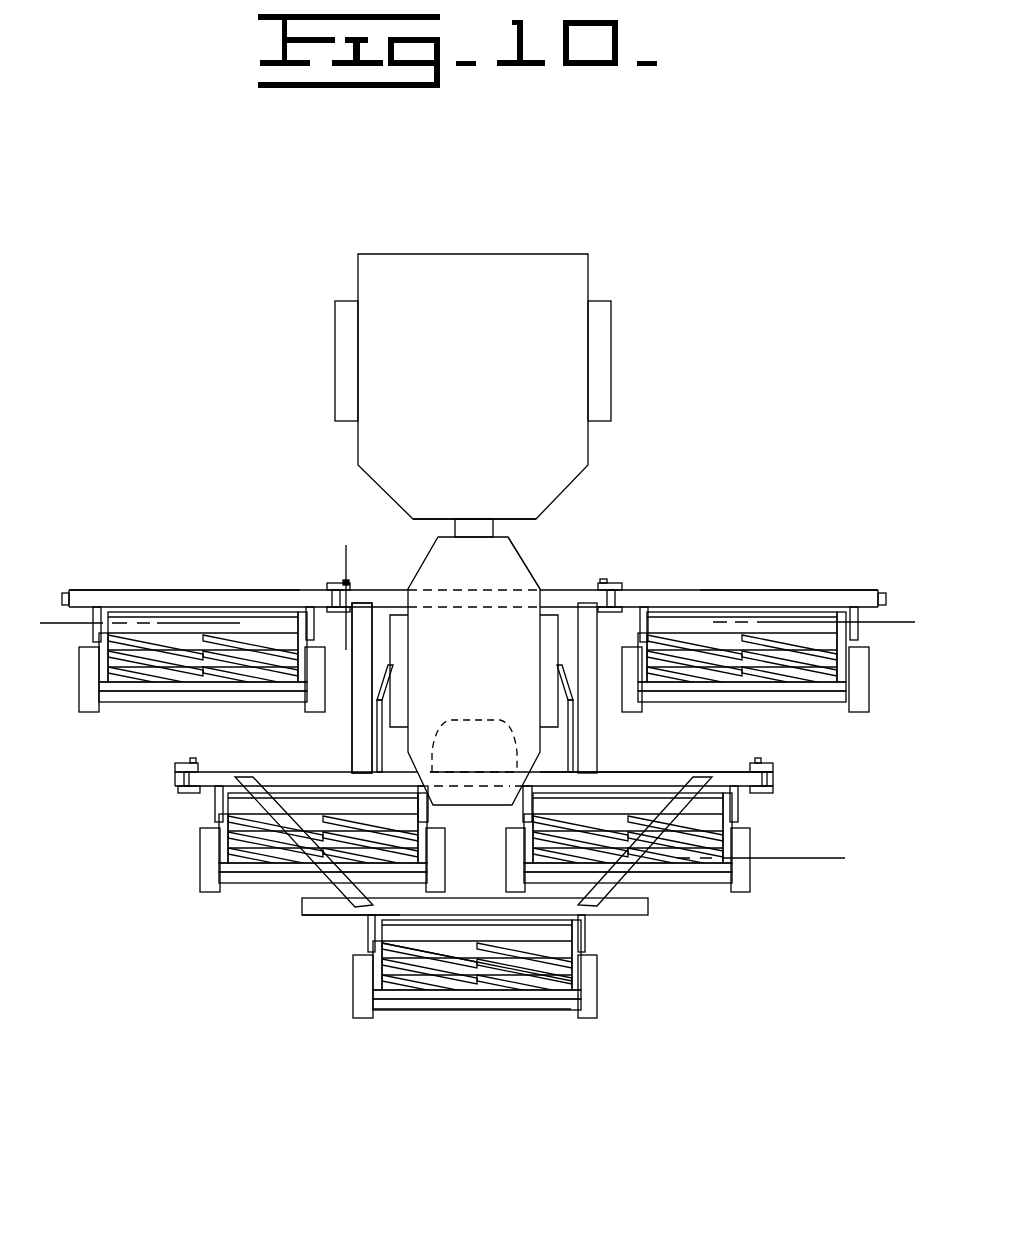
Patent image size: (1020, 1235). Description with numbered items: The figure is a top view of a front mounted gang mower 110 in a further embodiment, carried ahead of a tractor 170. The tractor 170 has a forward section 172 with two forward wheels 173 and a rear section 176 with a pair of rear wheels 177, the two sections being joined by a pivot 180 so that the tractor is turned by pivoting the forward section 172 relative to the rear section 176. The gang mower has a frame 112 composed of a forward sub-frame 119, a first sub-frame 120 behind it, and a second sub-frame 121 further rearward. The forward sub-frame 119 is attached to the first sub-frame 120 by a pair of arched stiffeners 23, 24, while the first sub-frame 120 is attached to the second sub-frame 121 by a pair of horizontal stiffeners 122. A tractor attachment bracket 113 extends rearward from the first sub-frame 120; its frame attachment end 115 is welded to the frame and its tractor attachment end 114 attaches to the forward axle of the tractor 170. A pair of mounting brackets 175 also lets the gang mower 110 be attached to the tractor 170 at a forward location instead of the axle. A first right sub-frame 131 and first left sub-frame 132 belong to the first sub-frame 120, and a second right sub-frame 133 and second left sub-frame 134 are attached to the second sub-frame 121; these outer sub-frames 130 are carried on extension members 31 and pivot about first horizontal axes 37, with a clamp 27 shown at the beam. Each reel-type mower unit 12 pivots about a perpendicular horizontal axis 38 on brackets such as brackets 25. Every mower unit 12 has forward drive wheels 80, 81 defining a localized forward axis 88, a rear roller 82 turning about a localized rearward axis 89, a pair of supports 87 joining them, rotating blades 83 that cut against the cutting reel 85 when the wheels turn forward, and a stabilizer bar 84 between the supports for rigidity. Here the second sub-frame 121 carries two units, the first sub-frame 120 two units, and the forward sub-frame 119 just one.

The tractor 170 is at (540, 198).
The forward section 172 is at (410, 254).
The rear wheels 177 is at (612, 357).
The rear section 176 is at (427, 556).
The pivot 180 is at (493, 528).
The frame 112 is at (373, 575).
The forward wheels 173 is at (563, 643).
The second sub-frame 121 is at (541, 598).
The mounting brackets 175 is at (474, 744).
The tractor attachment end 114 is at (390, 668).
The tractor attachment bracket 113 is at (383, 718).
The frame attachment end 115 is at (373, 772).
The horizontal stiffeners 122 is at (352, 728).
The outer sub-frames 130 is at (700, 591).
The second left sub-frame 134 is at (170, 591).
The second right sub-frame 133 is at (812, 591).
The first horizontal axes 37 is at (340, 566).
The clamp bracket 27 is at (620, 598).
The front mounted gang mower 110 is at (838, 512).
The localized rearward axis 89 is at (46, 623).
The horizontal axis 38 is at (886, 622).
The extension members 31 is at (773, 753).
The first sub-frame 120 is at (728, 772).
The first left sub-frame 132 is at (210, 772).
The first right sub-frame 131 is at (675, 772).
The rear roller 82 is at (216, 800).
The arched stiffener 23 is at (347, 888).
The localized forward axis 88 is at (805, 858).
The arched stiffener 24 is at (650, 892).
The brackets 25 is at (608, 929).
The forward sub-frame 119 is at (346, 915).
The mower unit 12 is at (474, 1037).
The supports 87 is at (575, 952).
The forward drive wheel 80 is at (353, 985).
The forward drive wheel 81 is at (597, 986).
The rotating blades 83 is at (420, 973).
The stabilizer bar 84 is at (457, 1007).
The cutting reel 85 is at (517, 985).